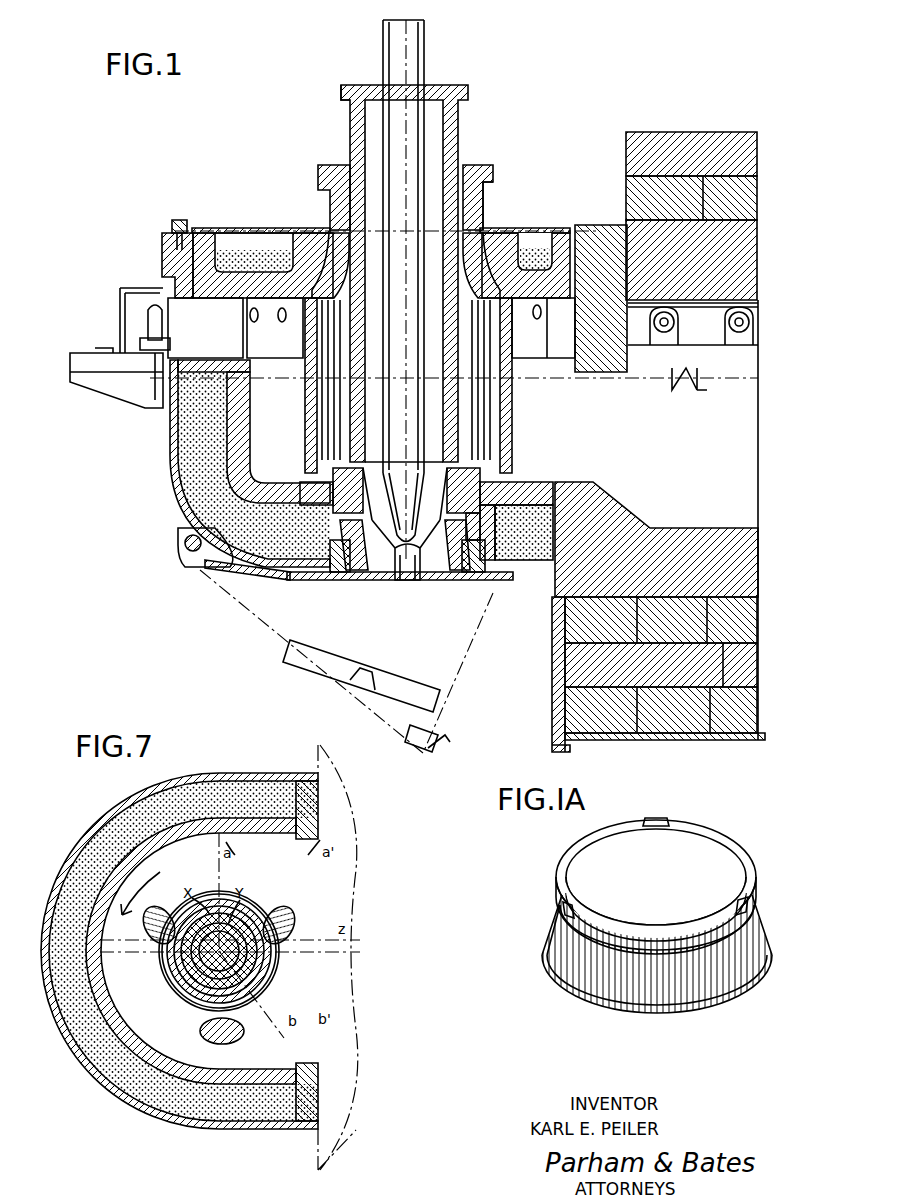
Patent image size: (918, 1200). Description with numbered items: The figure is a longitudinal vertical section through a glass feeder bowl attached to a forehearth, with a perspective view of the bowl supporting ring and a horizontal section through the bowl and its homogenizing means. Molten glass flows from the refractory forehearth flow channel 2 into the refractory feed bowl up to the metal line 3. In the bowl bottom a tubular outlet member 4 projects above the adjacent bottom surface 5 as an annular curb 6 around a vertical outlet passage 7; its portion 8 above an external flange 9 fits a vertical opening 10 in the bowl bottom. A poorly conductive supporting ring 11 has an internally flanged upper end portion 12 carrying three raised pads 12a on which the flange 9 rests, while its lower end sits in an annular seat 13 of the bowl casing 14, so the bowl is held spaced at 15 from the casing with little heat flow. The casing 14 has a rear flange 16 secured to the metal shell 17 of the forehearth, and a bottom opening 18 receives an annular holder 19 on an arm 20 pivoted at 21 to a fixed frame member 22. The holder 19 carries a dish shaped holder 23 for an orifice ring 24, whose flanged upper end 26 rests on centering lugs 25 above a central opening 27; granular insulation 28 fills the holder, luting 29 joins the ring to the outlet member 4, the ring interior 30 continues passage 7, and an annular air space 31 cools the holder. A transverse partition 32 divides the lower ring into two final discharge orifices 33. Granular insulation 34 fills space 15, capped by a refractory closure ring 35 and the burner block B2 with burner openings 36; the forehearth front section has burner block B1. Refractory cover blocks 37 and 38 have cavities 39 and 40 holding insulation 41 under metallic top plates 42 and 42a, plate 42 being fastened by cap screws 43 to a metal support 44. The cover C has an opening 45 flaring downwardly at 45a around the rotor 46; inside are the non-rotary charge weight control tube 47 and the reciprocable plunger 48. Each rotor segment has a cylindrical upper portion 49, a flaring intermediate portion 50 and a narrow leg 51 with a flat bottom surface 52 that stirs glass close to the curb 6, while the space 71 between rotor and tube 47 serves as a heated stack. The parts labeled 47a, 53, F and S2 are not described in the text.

In FIG. 1, the forehearth flow channel 2 is at (605, 496).
In FIG. 7, the forehearth flow channel 2 is at (338, 853).
In FIG. 1, the metal line 3 is at (540, 380).
In FIG. 1, the tubular outlet member 4 is at (482, 482).
In FIG. 1, the feed bowl bottom surface 5 is at (300, 483).
In FIG. 1, the annular curb 6 is at (478, 478).
In FIG. 1, the vertical outlet passage 7 is at (418, 505).
In FIG. 1, the outlet member upper portion 8 is at (332, 478).
In FIG. 1, the external flange 9 is at (522, 502).
In FIG. 1, the vertical opening 10 is at (496, 500).
In FIG. 1, the supporting ring 11 is at (290, 572).
In FIG. 1A, the supporting ring 11 is at (755, 900).
In FIG. 1, the internally flanged upper end portion 12 is at (378, 528).
In FIG. 1A, the internally flanged upper end portion 12 is at (720, 858).
In FIG. 1A, the bearing pads 12a is at (668, 820).
In FIG. 1, the annular seat 13 is at (325, 575).
In FIG. 1, the bowl casing 14 is at (244, 567).
In FIG. 7, the bowl casing 14 is at (95, 1078).
In FIG. 1, the space 15 is at (245, 376).
In FIG. 1, the casing flange 16 is at (550, 660).
In FIG. 1, the forehearth casing 17 is at (553, 745).
In FIG. 1, the casing bottom opening 18 is at (340, 580).
In FIG. 1, the annular holder 19 is at (484, 590).
In FIG. 1, the arm 20 is at (228, 570).
In FIG. 1, the pivot 21 is at (185, 545).
In FIG. 1, the supporting frame member 22 is at (188, 562).
In FIG. 1, the dish shaped holder 23 is at (353, 582).
In FIG. 1, the orifice ring 24 is at (368, 580).
In FIG. 1, the centering lugs 25 is at (447, 536).
In FIG. 1, the flanged upper end portion 26 is at (395, 556).
In FIG. 1, the central opening 27 is at (470, 580).
In FIG. 1, the granular insulation 28 is at (396, 582).
In FIG. 1, the luting 29 is at (574, 485).
In FIG. 1, the orifice ring interior 30 is at (448, 583).
In FIG. 1, the annular air space 31 is at (420, 565).
In FIG. 1, the transverse partition 32 is at (421, 582).
In FIG. 1, the final discharge orifices 33 is at (410, 583).
In FIG. 1, the granular insulation 34 is at (215, 432).
In FIG. 7, the granular insulation 34 is at (70, 1040).
In FIG. 1, the annular closure ring 35 is at (205, 372).
In FIG. 1, the burner openings 36 is at (247, 312).
In FIG. 1, the refractory cover block 37 is at (215, 296).
In FIG. 1, the refractory cover block 38 is at (543, 328).
In FIG. 1, the cavity 39 is at (225, 245).
In FIG. 1, the cavity 40 is at (549, 247).
In FIG. 1, the granular insulation 41 is at (262, 248).
In FIG. 1, the metallic top plate 42 is at (240, 232).
In FIG. 1, the metallic top plate 42a is at (520, 232).
In FIG. 1, the cap screws 43 is at (178, 222).
In FIG. 1, the metal support 44 is at (162, 256).
In FIG. 1, the cover opening 45 is at (495, 250).
In FIG. 1, the downwardly flaring portion 45a is at (529, 315).
In FIG. 1, the rotary glass homogenizing and stirring implement 46 is at (494, 163).
In FIG. 1, the charge weight control tube 47 is at (460, 110).
In FIG. 7, the charge weight control tube 47 is at (270, 975).
In FIG. 1, the flange 47a is at (341, 100).
In FIG. 1, the charge shape control plunger 48 is at (410, 95).
In FIG. 7, the charge shape control plunger 48 is at (200, 963).
In FIG. 1, the cylindrical upper portion 49 is at (330, 195).
In FIG. 1, the outwardly flaring intermediate portion 50 is at (318, 248).
In FIG. 7, the outwardly flaring intermediate portion 50 is at (257, 960).
In FIG. 1, the lower portion 51 is at (316, 405).
In FIG. 7, the lower portion 51 is at (283, 915).
In FIG. 1, the flat bottom surface 52 is at (385, 501).
In FIG. 1, the collar 53 is at (494, 173).
In FIG. 1, the space 71 is at (463, 167).
In FIG. 1, the forehearth F is at (711, 121).
In FIG. 1, the cover structure C is at (154, 220).
In FIG. 1, the burner block B1 is at (718, 338).
In FIG. 1, the burner block B2 is at (170, 318).
In FIG. 1, the spout S2 is at (620, 373).